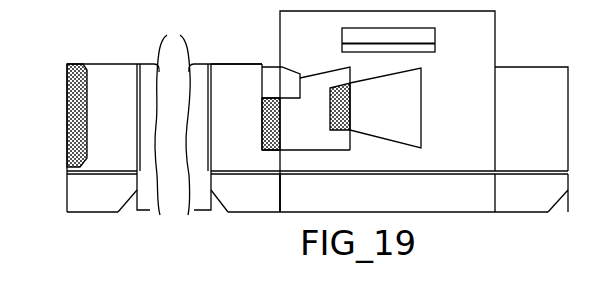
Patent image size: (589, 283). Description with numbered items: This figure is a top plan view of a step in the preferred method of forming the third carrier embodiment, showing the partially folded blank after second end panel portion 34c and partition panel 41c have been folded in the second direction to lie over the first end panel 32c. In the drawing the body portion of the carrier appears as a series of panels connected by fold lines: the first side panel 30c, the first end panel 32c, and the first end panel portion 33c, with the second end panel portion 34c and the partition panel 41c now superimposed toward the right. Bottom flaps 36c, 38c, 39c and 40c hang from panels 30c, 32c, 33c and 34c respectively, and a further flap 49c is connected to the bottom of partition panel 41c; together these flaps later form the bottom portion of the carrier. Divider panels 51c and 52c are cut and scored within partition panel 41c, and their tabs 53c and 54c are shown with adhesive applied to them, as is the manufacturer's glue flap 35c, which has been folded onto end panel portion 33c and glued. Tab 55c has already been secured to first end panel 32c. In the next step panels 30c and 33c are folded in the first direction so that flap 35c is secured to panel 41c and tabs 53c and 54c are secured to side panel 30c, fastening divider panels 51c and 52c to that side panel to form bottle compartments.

The first side panel 30c is at (317, 112).
The first end panel 32c is at (219, 128).
The first end panel portion 33c is at (96, 128).
The second end panel portion 34c is at (518, 135).
The glue flap 35c is at (70, 104).
The bottom flap 36c is at (150, 209).
The bottom flap 38c is at (230, 200).
The bottom flap 39c is at (81, 196).
The bottom flap 40c is at (509, 202).
The partition panel 41c is at (441, 107).
The flap 49c is at (356, 200).
The divider panel 51c is at (371, 118).
The divider panel 52c is at (294, 132).
The tab 53c is at (340, 123).
The tab 54c is at (272, 145).
The tab 55c is at (270, 82).